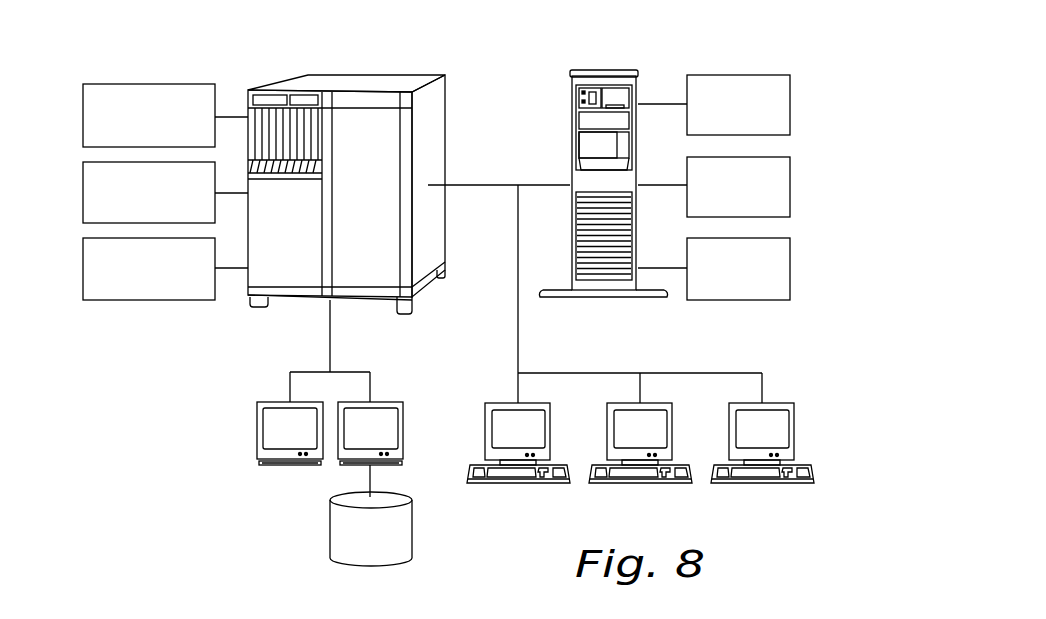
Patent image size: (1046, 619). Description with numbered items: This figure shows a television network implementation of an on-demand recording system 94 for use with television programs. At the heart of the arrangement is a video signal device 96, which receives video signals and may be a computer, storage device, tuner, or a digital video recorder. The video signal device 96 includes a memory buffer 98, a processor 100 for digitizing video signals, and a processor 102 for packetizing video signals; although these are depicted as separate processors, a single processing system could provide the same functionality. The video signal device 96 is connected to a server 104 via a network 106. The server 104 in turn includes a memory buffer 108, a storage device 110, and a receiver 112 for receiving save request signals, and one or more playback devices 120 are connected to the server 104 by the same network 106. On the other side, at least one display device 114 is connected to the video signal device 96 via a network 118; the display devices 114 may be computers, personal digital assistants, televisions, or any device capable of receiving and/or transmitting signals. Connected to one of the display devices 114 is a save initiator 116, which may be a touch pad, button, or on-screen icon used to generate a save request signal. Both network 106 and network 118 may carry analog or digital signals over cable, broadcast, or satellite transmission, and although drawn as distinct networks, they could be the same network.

The on-demand recording system 94 is at (528, 62).
The video signal device 96 is at (376, 81).
The memory buffer 98 is at (150, 84).
The processor 100 is at (83, 190).
The processor 102 is at (148, 301).
The server 104 is at (604, 70).
The network 106 is at (518, 311).
The memory buffer 108 is at (792, 104).
The storage device 110 is at (792, 186).
The receiver 112 is at (738, 302).
The display device 114 is at (257, 429).
The save initiator 116 is at (330, 528).
The network 118 is at (328, 336).
The playback device 120 is at (518, 485).